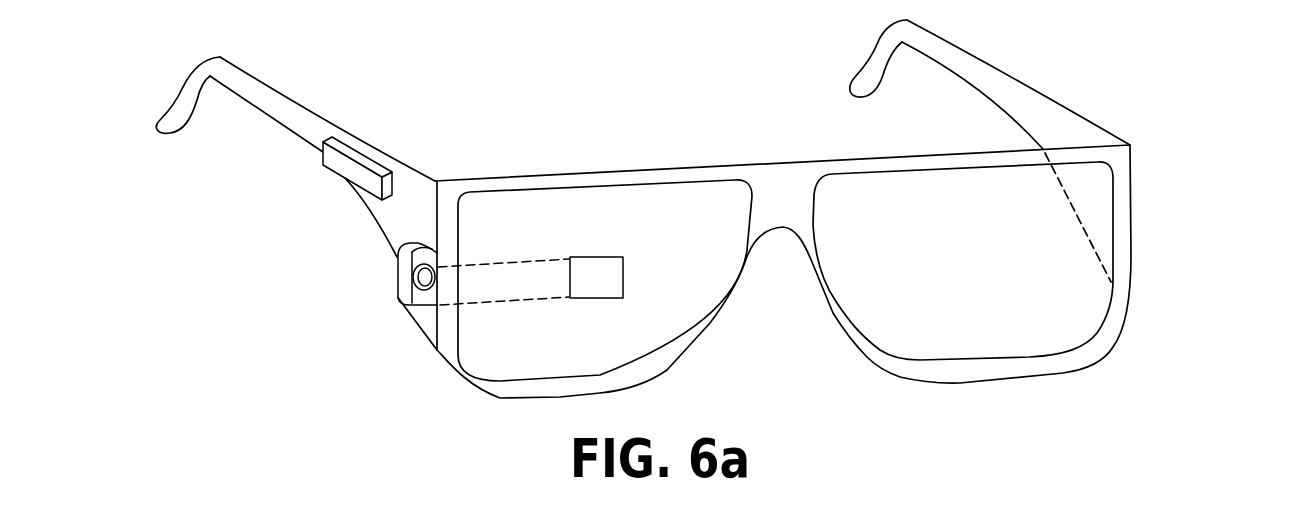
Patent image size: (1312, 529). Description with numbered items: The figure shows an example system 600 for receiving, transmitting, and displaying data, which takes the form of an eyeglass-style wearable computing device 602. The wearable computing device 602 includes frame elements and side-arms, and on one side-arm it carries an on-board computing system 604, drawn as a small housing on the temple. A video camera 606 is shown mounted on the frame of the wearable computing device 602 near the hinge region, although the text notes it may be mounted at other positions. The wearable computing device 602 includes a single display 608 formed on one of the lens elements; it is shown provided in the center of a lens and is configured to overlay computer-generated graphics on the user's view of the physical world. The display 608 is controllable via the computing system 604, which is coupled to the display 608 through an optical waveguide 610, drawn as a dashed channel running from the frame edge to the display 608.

The system 600 is at (1088, 60).
The wearable computing device 602 is at (1197, 227).
The on-board computing system 604 is at (344, 167).
The video camera 606 is at (400, 282).
The display 608 is at (592, 302).
The optical waveguide 610 is at (485, 303).